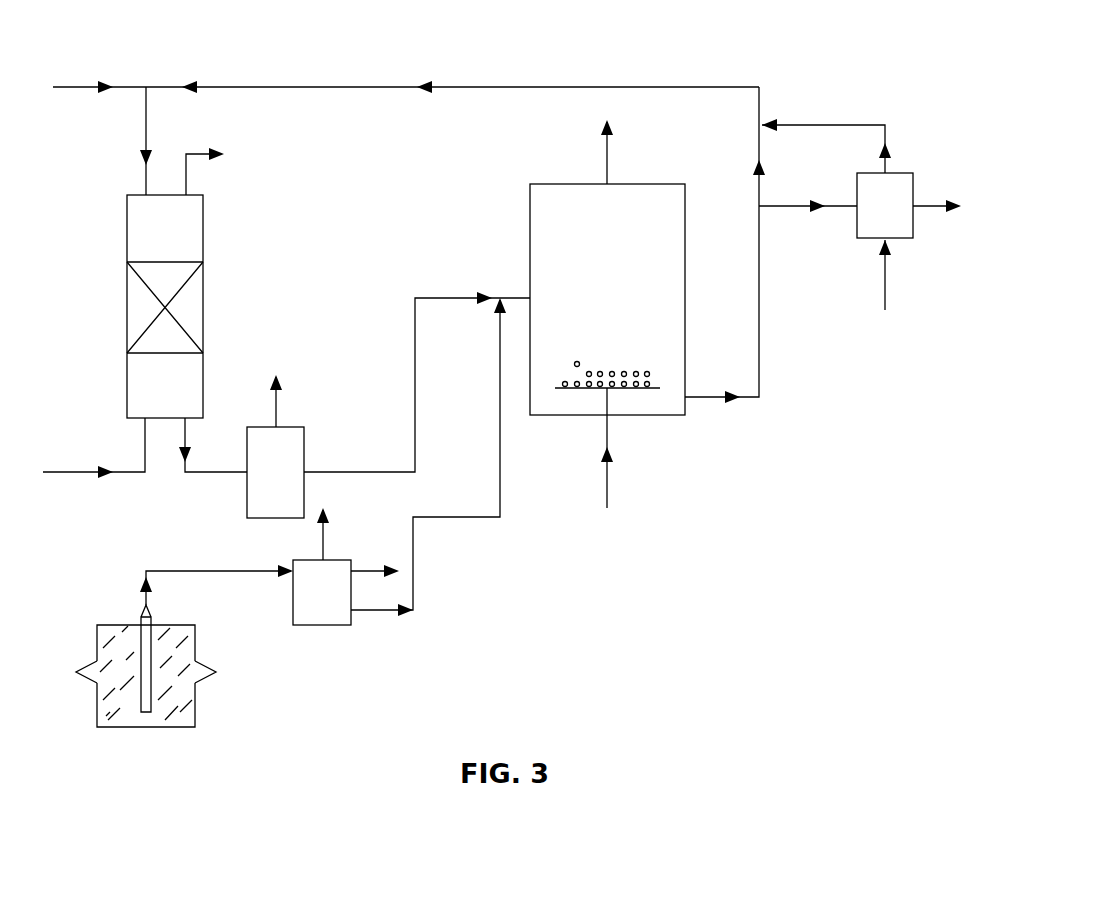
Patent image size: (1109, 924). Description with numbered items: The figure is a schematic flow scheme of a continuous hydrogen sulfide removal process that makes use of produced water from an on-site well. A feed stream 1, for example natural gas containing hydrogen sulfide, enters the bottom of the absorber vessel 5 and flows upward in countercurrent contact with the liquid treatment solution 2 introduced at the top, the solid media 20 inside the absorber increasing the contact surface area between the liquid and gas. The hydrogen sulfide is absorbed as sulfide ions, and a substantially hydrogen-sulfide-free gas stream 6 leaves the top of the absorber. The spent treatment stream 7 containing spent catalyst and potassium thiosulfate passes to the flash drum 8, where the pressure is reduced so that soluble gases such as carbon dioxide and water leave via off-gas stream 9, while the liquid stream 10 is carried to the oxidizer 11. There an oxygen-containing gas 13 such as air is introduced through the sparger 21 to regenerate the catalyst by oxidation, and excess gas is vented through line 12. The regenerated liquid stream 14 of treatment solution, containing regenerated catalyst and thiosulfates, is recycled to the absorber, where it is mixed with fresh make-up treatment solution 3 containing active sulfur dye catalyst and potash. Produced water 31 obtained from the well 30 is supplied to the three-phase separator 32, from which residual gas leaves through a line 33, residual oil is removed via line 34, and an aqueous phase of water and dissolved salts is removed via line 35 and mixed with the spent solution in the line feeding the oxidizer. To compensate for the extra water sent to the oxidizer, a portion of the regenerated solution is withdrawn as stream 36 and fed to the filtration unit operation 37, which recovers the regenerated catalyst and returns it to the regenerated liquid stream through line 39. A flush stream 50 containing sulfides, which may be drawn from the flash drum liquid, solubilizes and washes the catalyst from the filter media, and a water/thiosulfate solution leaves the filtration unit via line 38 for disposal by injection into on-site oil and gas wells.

The feed stream 1 is at (73, 471).
The liquid treatment solution 2 is at (146, 122).
The make-up treatment solution 3 is at (80, 85).
The absorber vessel 5 is at (173, 242).
The H2S-free gas stream 6 is at (197, 157).
The spent treatment stream 7 is at (198, 475).
The flash drum 8 is at (284, 486).
The off-gas stream 9 is at (276, 410).
The liquid stream 10 is at (415, 410).
The oxidizer 11 is at (622, 269).
The excess oxygen-containing gas line 12 is at (607, 160).
The oxygen-containing gas 13 is at (607, 468).
The regenerated liquid stream 14 is at (759, 337).
The solid media 20 is at (193, 310).
The sparger 21 is at (600, 372).
The well 30 is at (152, 615).
The produced water 31 is at (162, 570).
The three-phase separator 32 is at (337, 606).
The separator gas outlet 33 is at (323, 530).
The residual oil line 34 is at (392, 547).
The aqueous phase line 35 is at (413, 570).
The regenerated solution portion stream 36 is at (783, 206).
The filtration unit operation 37 is at (900, 219).
The water/thiosulfate solution line 38 is at (928, 206).
The catalyst recycle line 39 is at (885, 132).
The flush stream 50 is at (885, 288).